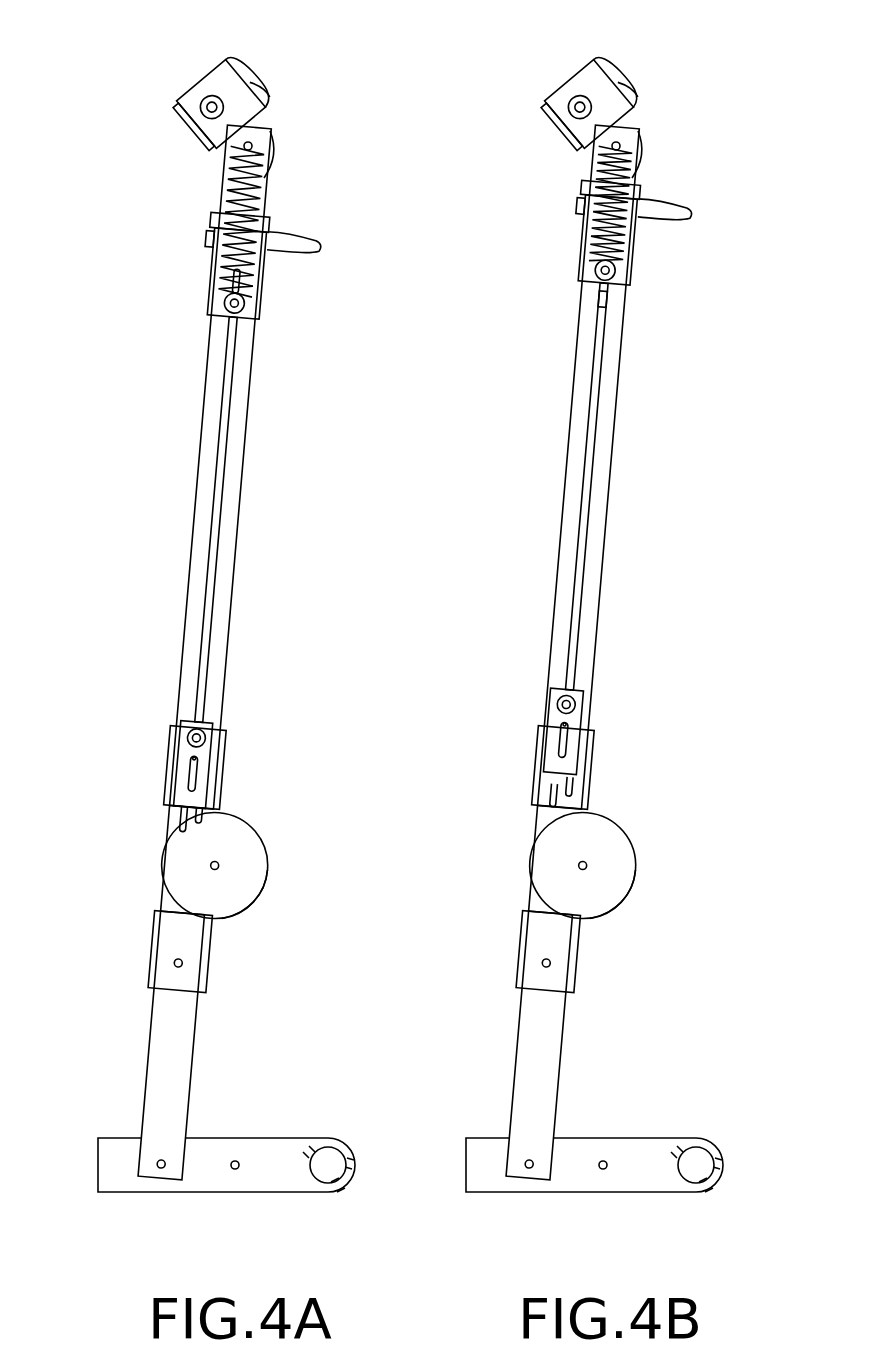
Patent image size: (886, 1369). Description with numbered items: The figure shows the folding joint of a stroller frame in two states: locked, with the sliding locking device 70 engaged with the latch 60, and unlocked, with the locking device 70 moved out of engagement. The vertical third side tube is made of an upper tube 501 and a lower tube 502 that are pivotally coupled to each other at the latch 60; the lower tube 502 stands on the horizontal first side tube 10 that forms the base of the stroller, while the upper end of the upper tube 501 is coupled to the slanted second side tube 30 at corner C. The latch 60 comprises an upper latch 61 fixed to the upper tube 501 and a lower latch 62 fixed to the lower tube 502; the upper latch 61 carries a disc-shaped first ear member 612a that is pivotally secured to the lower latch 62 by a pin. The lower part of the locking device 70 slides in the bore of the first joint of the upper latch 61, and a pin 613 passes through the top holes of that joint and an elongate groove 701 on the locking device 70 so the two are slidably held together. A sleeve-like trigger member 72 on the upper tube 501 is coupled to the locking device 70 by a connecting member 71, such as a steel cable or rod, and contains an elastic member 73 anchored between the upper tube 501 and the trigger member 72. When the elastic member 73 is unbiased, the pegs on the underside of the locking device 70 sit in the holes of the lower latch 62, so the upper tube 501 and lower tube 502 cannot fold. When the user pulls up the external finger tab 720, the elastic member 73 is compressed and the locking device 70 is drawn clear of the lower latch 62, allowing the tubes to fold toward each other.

In FIG. 4A, the first side tube 10 is at (270, 1153).
In FIG. 4B, the first side tube 10 is at (638, 1153).
In FIG. 4A, the second side tube 30 is at (248, 57).
In FIG. 4B, the second side tube 30 is at (616, 57).
In FIG. 4A, the corner C is at (252, 144).
In FIG. 4B, the corner C is at (620, 144).
In FIG. 4A, the upper tube 501 is at (252, 403).
In FIG. 4B, the upper tube 501 is at (620, 403).
In FIG. 4A, the lower tube 502 is at (157, 1077).
In FIG. 4B, the lower tube 502 is at (525, 1077).
In FIG. 4A, the latch 60 is at (268, 827).
In FIG. 4B, the latch 60 is at (636, 827).
In FIG. 4A, the upper latch 61 is at (231, 758).
In FIG. 4B, the upper latch 61 is at (599, 758).
In FIG. 4A, the first ear member 612a is at (250, 871).
In FIG. 4B, the first ear member 612a is at (618, 871).
In FIG. 4A, the pin 613 is at (190, 741).
In FIG. 4B, the pin 613 is at (558, 741).
In FIG. 4A, the lower latch 62 is at (148, 943).
In FIG. 4B, the lower latch 62 is at (516, 943).
In FIG. 4A, the locking device 70 is at (218, 726).
In FIG. 4B, the locking device 70 is at (586, 726).
In FIG. 4A, the elongate groove 701 is at (187, 778).
In FIG. 4B, the elongate groove 701 is at (555, 778).
In FIG. 4A, the connecting member 71 is at (225, 484).
In FIG. 4B, the connecting member 71 is at (593, 484).
In FIG. 4A, the trigger member 72 is at (203, 280).
In FIG. 4B, the trigger member 72 is at (570, 249).
In FIG. 4A, the finger tab 720 is at (293, 243).
In FIG. 4B, the finger tab 720 is at (663, 212).
In FIG. 4A, the elastic member 73 is at (230, 197).
In FIG. 4B, the elastic member 73 is at (600, 181).